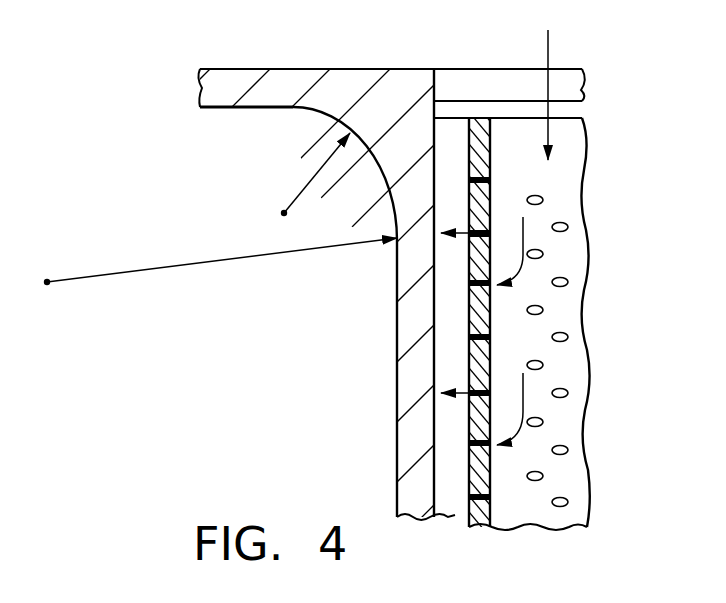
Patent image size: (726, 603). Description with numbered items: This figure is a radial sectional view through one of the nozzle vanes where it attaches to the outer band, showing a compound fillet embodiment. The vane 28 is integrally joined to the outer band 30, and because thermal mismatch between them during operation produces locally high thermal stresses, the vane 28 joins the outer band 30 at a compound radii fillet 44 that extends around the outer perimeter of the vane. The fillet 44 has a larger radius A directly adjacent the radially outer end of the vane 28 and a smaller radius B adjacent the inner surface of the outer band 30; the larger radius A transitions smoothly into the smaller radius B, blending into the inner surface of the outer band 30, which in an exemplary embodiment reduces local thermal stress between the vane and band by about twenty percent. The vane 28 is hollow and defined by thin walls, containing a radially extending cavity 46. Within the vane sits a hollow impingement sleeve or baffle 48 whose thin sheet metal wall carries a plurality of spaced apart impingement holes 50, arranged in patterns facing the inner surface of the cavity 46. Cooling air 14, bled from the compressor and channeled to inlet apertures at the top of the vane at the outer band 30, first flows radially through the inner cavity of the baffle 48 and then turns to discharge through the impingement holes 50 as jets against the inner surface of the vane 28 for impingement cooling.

The cooling air 14 is at (548, 48).
The outer band 30 is at (200, 91).
The compound radii fillet 44 is at (322, 117).
The smaller radius B is at (310, 182).
The larger radius A is at (212, 260).
The vane 28 is at (397, 381).
The cavity 46 is at (436, 479).
The impingement holes 50 is at (466, 500).
The impingement sleeve or baffle 48 is at (560, 527).